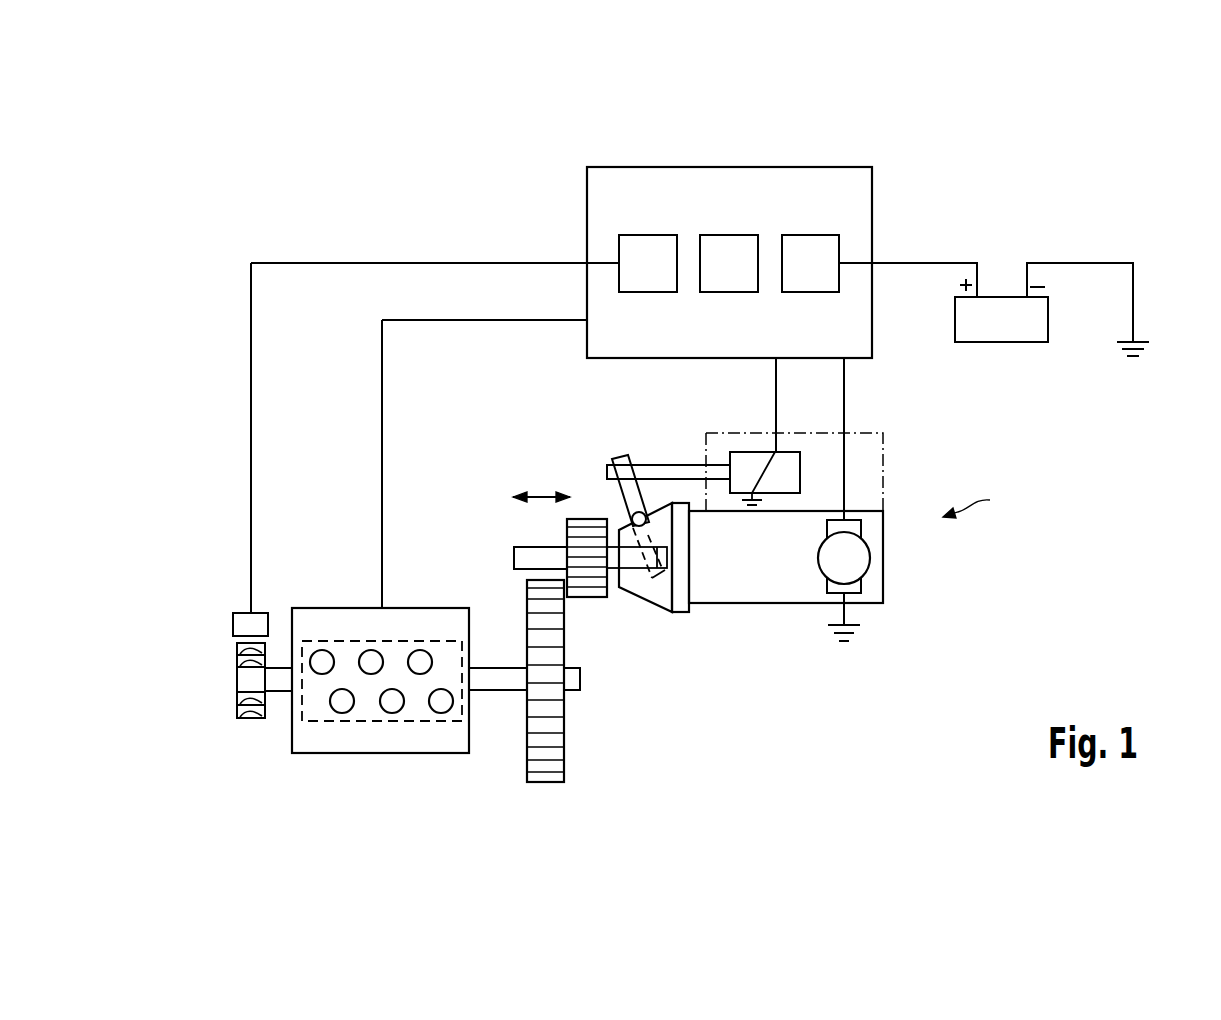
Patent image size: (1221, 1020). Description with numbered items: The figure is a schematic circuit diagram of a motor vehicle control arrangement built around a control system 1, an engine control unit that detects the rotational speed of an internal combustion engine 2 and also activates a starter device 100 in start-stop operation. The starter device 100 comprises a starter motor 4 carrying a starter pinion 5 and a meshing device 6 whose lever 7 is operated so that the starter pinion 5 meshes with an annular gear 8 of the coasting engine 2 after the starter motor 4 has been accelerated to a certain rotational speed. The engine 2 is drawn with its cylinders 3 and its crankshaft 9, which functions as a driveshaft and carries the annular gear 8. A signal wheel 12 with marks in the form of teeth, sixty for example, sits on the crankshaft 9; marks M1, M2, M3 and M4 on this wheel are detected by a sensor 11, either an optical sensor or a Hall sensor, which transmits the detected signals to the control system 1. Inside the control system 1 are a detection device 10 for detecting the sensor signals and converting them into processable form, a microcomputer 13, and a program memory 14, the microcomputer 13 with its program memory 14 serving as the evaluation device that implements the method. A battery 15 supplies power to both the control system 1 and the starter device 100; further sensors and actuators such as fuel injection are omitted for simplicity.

The control system 1 is at (727, 167).
The internal combustion engine 2 is at (402, 755).
The cylinders 3 is at (337, 722).
The starter motor 4 is at (861, 555).
The starter pinion 5 is at (590, 595).
The meshing device 6 is at (858, 471).
The lever 7 is at (627, 493).
The annular gear 8 is at (555, 740).
The crankshaft 9 is at (500, 683).
The detection device 10 is at (645, 235).
The sensor 11 is at (233, 625).
The signal wheel 12 is at (237, 682).
The microcomputer 13 is at (727, 235).
The program memory 14 is at (808, 235).
The battery 15 is at (1003, 344).
The starter device 100 is at (987, 500).
The mark M1 is at (237, 712).
The mark M2 is at (237, 648).
The mark M3 is at (237, 699).
The mark M4 is at (237, 661).